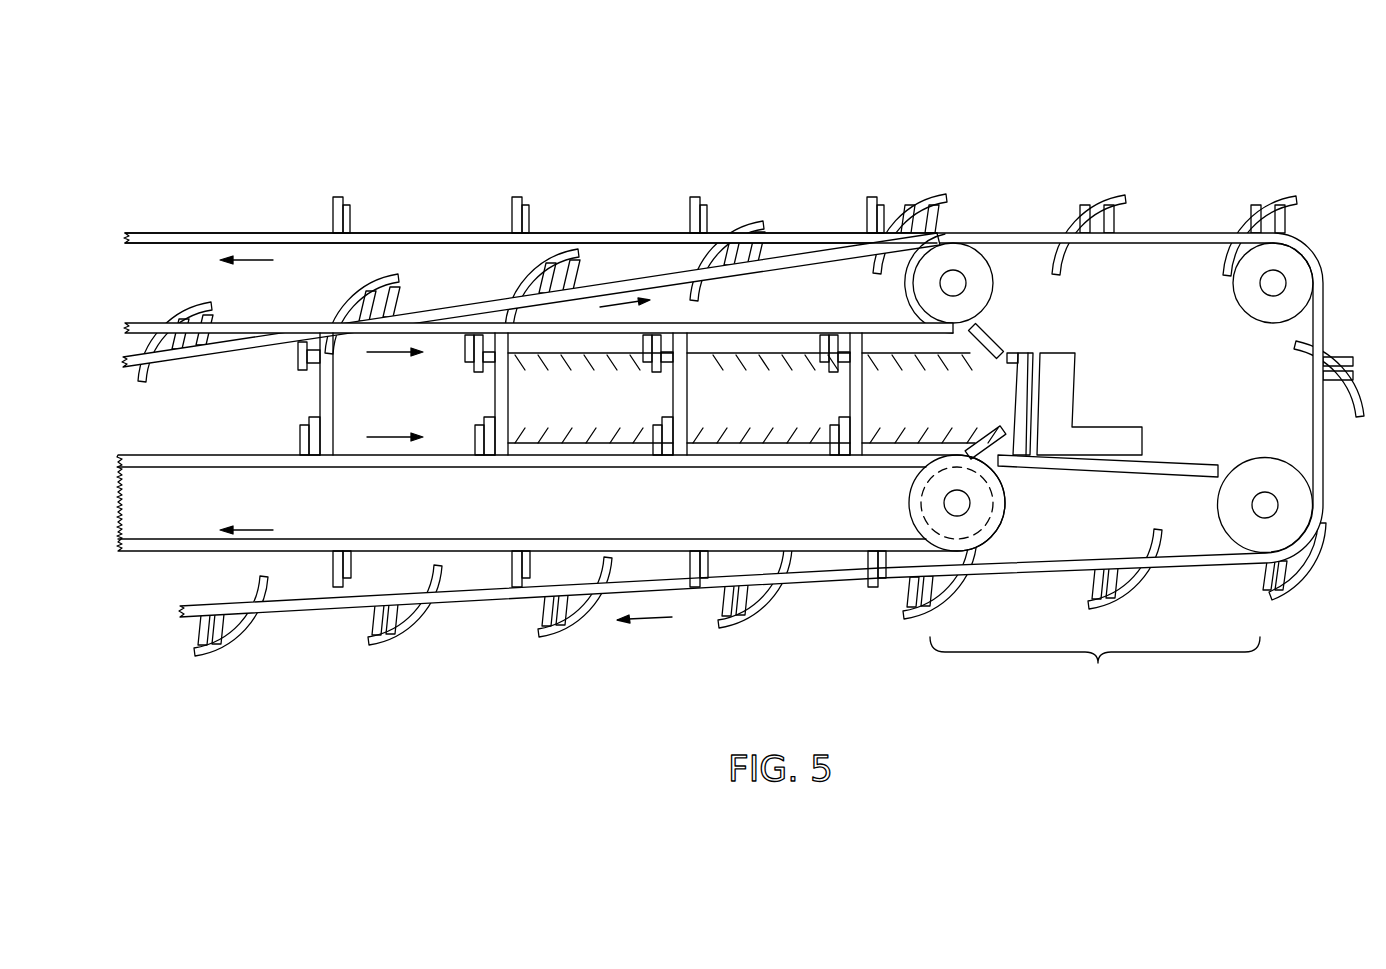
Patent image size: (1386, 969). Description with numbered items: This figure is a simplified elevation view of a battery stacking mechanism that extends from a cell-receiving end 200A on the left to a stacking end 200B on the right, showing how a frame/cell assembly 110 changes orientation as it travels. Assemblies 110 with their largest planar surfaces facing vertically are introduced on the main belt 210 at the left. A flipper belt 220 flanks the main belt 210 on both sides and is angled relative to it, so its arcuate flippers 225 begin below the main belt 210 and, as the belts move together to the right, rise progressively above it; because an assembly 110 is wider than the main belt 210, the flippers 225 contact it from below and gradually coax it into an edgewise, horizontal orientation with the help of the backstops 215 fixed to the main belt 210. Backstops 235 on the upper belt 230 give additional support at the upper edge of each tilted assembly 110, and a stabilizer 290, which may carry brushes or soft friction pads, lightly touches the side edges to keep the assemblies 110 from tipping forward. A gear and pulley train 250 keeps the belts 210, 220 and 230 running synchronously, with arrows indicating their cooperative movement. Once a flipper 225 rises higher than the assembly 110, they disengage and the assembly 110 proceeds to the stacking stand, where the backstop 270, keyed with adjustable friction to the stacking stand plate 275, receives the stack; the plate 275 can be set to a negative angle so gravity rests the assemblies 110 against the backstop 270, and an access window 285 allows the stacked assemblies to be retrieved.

The cell-receiving end 200A is at (148, 439).
The stacking end 200B is at (1118, 126).
The frame/cell assembly 110 is at (522, 411).
The main belt 210 is at (266, 463).
The backstop 215 is at (841, 428).
The flipper belt 220 is at (447, 312).
The flipper 225 is at (528, 272).
The upper belt 230 is at (190, 236).
The backstop 235 is at (815, 364).
The gears, pulleys and related equipment 250 is at (1095, 668).
The stacking stand backstop 270 is at (1060, 352).
The stacking stand plate 275 is at (1180, 467).
The access window 285 is at (1193, 381).
The stabilizer 290 is at (617, 445).